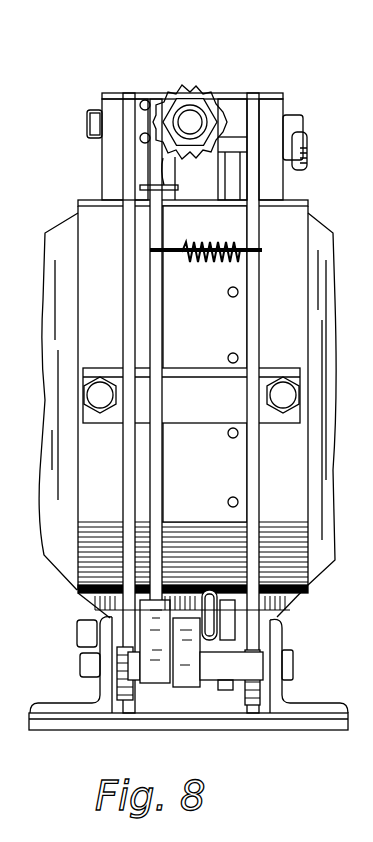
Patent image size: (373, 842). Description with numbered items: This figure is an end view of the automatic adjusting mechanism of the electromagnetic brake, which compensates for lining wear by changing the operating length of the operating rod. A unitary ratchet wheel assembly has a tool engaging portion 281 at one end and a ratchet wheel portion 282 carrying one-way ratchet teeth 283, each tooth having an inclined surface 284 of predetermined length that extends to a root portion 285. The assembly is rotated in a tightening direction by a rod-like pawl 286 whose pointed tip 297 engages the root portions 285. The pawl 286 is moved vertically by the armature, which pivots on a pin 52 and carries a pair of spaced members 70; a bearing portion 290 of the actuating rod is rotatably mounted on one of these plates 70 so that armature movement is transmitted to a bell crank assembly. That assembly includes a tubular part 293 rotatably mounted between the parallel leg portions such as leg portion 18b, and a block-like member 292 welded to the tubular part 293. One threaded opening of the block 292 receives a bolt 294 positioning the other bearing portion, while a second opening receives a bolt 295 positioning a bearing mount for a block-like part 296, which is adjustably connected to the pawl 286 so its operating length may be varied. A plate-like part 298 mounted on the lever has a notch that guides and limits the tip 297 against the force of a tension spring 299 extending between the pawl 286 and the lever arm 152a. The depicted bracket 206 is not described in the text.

The ratchet wheel portion 282 is at (215, 36).
The inclined surface 284 is at (207, 93).
The ratchet teeth 283 is at (175, 92).
The tool engaging portion 281 is at (226, 145).
The root portion 285 is at (170, 143).
The pointed tip 297 is at (162, 150).
The plate-like part 298 is at (152, 187).
The lever arm 152a is at (258, 190).
The tension spring 299 is at (224, 225).
The pin 52 is at (127, 297).
The spaced members 70 is at (85, 378).
The pawl 286 is at (158, 322).
The bearing portion 290 is at (219, 606).
The bolt 294 is at (258, 607).
The tubular part 293 is at (230, 658).
The leg portion 18b is at (285, 686).
The bracket 206 is at (108, 625).
The bolt 295 is at (130, 672).
The block-like part 296 is at (160, 672).
The block-like member 292 is at (194, 672).